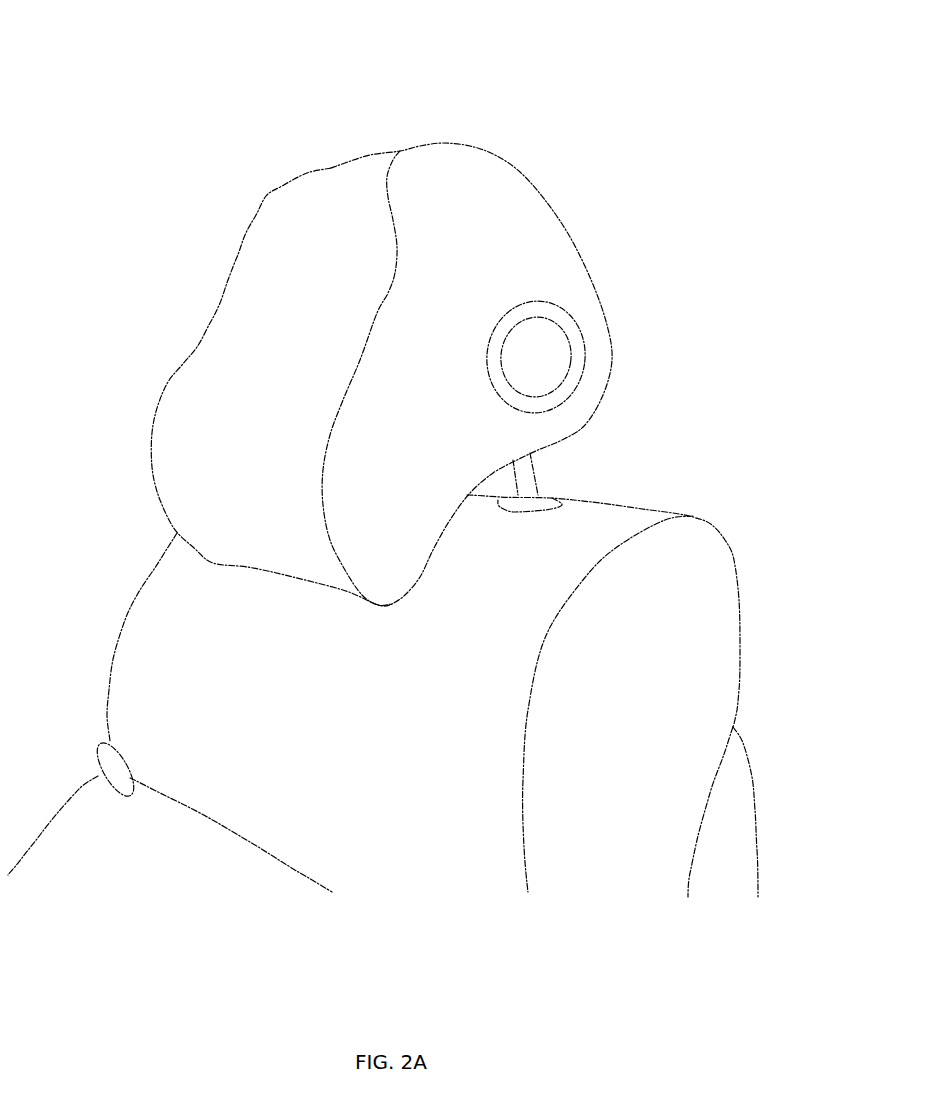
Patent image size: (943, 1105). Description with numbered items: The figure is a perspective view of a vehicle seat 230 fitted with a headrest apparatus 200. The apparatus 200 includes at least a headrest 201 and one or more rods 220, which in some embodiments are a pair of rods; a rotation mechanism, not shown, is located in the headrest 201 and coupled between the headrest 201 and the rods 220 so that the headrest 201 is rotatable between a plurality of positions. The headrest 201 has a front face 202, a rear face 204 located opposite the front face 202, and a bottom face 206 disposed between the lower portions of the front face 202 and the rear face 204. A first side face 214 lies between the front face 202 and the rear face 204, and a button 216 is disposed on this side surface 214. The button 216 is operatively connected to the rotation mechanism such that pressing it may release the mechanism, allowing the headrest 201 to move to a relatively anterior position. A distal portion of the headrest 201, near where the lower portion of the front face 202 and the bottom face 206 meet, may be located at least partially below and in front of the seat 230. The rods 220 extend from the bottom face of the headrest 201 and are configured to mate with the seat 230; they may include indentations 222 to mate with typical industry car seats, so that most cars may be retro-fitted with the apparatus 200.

The headrest apparatus 200 is at (183, 32).
The headrest 201 is at (331, 168).
The front face 202 is at (233, 350).
The rear face 204 is at (490, 154).
The bottom face 206 is at (425, 561).
The first side face 214 is at (478, 258).
The button 216 is at (560, 363).
The rods 220 is at (528, 458).
The indentations 222 is at (528, 477).
The vehicle seat 230 is at (182, 632).